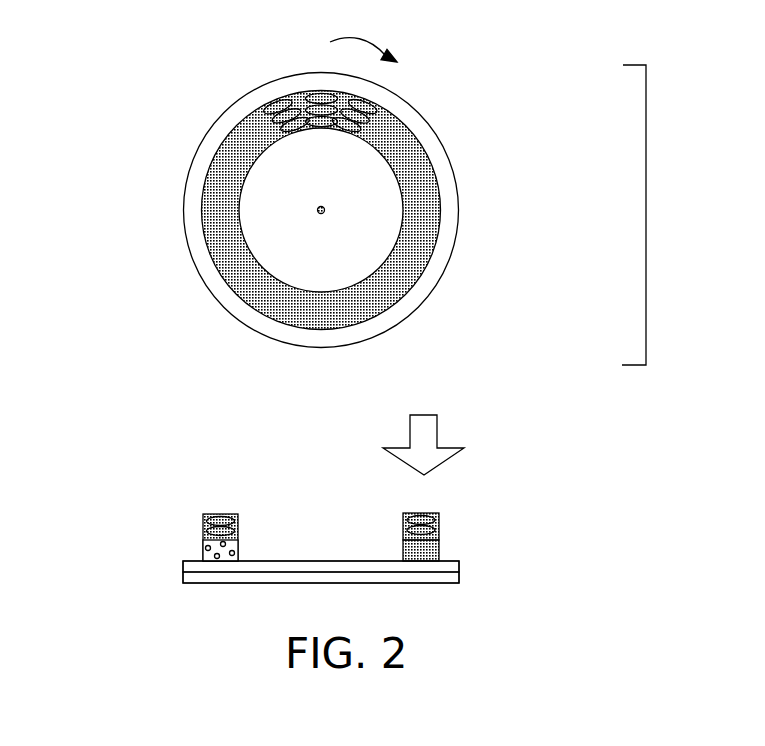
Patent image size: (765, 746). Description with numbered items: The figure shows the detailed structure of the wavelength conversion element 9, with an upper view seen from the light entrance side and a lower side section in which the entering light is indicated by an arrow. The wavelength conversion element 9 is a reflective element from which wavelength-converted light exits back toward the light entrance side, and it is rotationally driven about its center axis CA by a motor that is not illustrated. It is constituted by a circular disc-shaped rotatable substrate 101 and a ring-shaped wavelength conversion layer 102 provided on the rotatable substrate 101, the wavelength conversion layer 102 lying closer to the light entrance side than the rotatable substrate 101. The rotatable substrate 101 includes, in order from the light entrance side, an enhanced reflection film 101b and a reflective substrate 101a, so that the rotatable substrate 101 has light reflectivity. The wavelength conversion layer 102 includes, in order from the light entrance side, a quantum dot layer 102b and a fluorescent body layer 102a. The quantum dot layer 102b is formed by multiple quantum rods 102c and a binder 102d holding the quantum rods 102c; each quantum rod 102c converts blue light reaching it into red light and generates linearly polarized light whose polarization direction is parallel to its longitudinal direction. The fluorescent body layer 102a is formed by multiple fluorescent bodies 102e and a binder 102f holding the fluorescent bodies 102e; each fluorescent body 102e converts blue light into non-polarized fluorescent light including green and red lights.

The wavelength conversion element 9 is at (646, 214).
The rotatable substrate 101 is at (420, 127).
The reflective substrate 101a is at (183, 578).
The enhanced reflection film 101b is at (183, 565).
The wavelength conversion layer 102 is at (420, 209).
The fluorescent body layer 102a is at (440, 547).
The quantum dot layer 102b is at (440, 527).
The quantum rods 102c is at (321, 94).
The binder 102d is at (235, 515).
The fluorescent bodies 102e is at (225, 543).
The binder 102f is at (238, 557).
The center axis CA is at (318, 212).